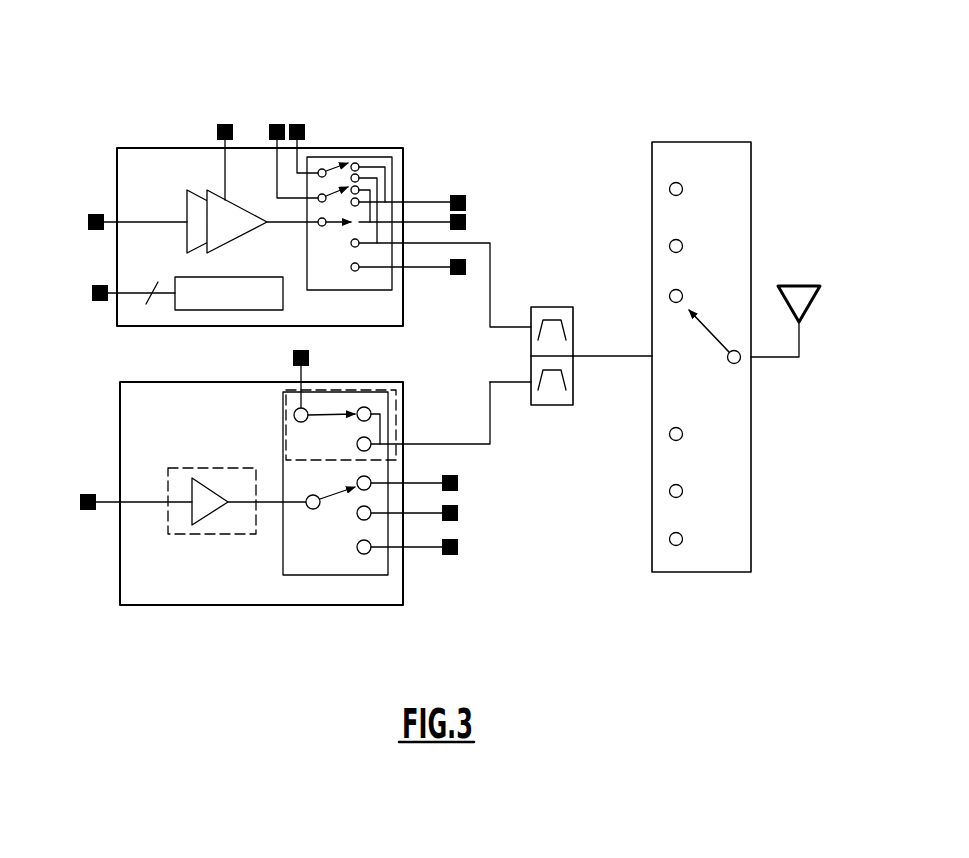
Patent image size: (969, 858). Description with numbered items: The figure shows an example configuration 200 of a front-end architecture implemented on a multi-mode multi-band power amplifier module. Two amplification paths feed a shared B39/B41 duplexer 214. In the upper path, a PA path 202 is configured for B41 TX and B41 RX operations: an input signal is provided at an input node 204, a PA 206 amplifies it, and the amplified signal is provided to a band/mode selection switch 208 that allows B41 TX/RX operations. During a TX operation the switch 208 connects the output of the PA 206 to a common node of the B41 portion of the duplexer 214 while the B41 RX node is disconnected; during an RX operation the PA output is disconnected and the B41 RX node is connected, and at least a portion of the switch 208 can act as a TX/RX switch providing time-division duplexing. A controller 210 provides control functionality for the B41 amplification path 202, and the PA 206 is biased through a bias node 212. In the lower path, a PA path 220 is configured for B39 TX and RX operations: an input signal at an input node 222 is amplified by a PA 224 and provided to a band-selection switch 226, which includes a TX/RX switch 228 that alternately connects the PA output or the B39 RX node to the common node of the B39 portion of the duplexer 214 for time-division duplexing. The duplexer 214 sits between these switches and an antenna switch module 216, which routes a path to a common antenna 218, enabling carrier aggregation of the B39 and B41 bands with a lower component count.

The configuration 200 is at (490, 62).
The PA path 202 is at (142, 148).
The input node 204 is at (92, 213).
The PA 206 is at (198, 180).
The band/mode selection switch 208 is at (385, 290).
The controller 210 is at (227, 277).
The bias node 212 is at (218, 128).
The B39/B41 duplexer 214 is at (586, 368).
The antenna switch module 216 is at (707, 573).
The common antenna 218 is at (810, 310).
The PA path 220 is at (183, 382).
The input node 222 is at (90, 493).
The PA 224 is at (167, 522).
The band-selection switch 226 is at (365, 575).
The TX/RX switch 228 is at (286, 420).